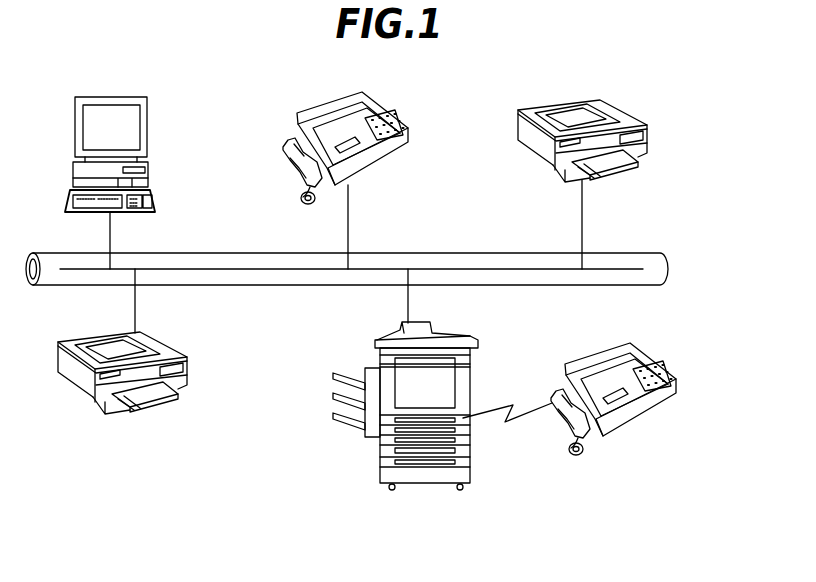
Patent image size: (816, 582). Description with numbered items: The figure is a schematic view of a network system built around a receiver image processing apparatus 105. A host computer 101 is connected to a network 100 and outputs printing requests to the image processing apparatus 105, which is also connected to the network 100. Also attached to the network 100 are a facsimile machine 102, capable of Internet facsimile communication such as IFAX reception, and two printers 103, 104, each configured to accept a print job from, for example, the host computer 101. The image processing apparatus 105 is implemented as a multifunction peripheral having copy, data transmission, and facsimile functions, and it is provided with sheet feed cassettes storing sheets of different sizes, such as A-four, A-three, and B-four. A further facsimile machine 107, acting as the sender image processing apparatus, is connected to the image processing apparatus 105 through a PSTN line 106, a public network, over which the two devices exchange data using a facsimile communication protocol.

The network 100 is at (552, 286).
The host computer 101 is at (110, 97).
The facsimile machine 102 is at (333, 100).
The printer 103 is at (568, 99).
The printer 104 is at (112, 417).
The receiver image processing apparatus 105 is at (425, 488).
The PSTN line 106 is at (519, 422).
The facsimile machine 107 is at (660, 362).